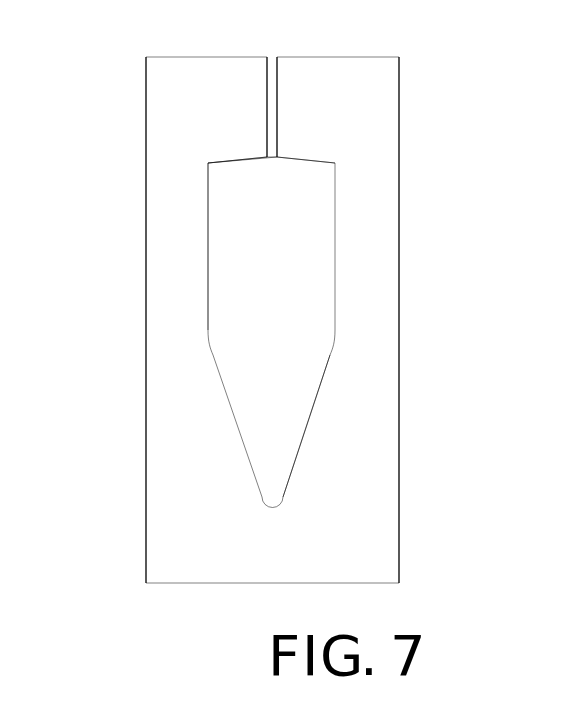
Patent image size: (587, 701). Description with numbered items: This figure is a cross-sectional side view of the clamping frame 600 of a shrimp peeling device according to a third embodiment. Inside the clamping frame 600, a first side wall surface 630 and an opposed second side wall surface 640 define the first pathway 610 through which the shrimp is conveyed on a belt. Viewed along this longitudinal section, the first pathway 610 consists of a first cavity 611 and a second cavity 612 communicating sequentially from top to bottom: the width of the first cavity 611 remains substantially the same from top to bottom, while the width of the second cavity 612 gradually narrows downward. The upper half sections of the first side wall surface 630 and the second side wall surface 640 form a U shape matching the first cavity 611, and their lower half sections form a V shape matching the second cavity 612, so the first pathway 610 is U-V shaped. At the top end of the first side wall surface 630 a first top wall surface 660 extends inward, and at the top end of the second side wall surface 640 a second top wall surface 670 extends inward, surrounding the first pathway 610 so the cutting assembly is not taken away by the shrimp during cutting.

The clamping frame 600 is at (100, 32).
The first pathway 610 is at (482, 287).
The first cavity 611 is at (303, 236).
The second cavity 612 is at (298, 378).
The first side wall surface 630 is at (208, 262).
The second side wall surface 640 is at (303, 440).
The first top wall surface 660 is at (242, 158).
The second top wall surface 670 is at (305, 160).